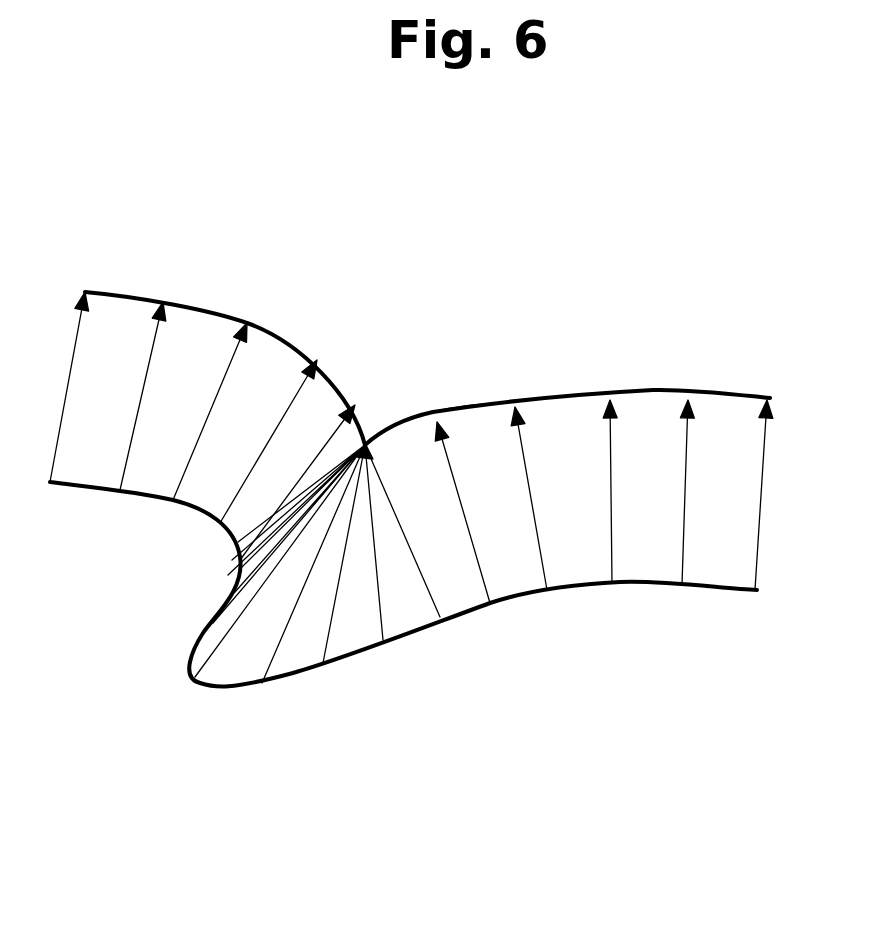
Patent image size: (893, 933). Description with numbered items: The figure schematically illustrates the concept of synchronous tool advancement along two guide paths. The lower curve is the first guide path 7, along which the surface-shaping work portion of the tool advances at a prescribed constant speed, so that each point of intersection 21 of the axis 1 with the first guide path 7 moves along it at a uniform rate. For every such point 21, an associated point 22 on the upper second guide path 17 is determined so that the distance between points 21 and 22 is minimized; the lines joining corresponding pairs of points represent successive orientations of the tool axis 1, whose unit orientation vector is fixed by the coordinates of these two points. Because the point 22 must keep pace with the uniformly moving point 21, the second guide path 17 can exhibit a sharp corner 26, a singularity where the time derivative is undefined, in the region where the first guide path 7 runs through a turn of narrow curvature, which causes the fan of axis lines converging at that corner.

The axis 1 is at (610, 490).
The first guide path 7 is at (597, 587).
The second guide path 17 is at (667, 390).
The point of intersection 21 is at (490, 603).
The point 22 is at (435, 410).
The sharp corner 26 is at (365, 445).